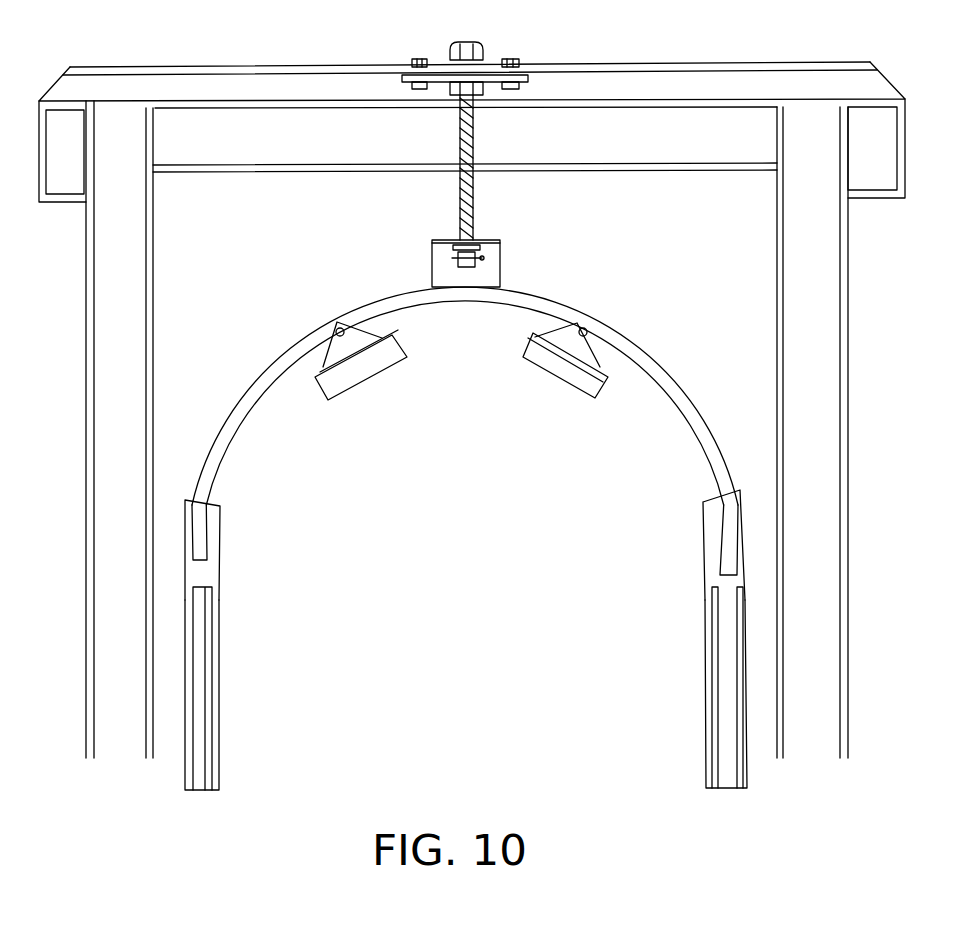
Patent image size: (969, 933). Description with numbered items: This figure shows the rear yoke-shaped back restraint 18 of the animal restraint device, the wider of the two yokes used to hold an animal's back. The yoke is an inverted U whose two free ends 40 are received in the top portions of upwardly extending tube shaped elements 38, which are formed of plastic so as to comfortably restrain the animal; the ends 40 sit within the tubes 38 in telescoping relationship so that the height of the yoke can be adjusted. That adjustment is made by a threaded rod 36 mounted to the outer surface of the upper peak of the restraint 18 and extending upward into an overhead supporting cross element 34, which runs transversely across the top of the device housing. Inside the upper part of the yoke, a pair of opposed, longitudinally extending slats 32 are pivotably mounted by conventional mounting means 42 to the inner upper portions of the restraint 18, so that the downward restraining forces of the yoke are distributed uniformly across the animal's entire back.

The rear yoke-shaped back restraint 18 is at (684, 360).
The longitudinally extending slat 32 is at (343, 390).
The overhead supporting cross element 34 is at (336, 60).
The threaded rod 36 is at (476, 199).
The tube shaped element 38 is at (219, 728).
The free end 40 is at (219, 495).
The pivotable mounting means 42 is at (332, 348).